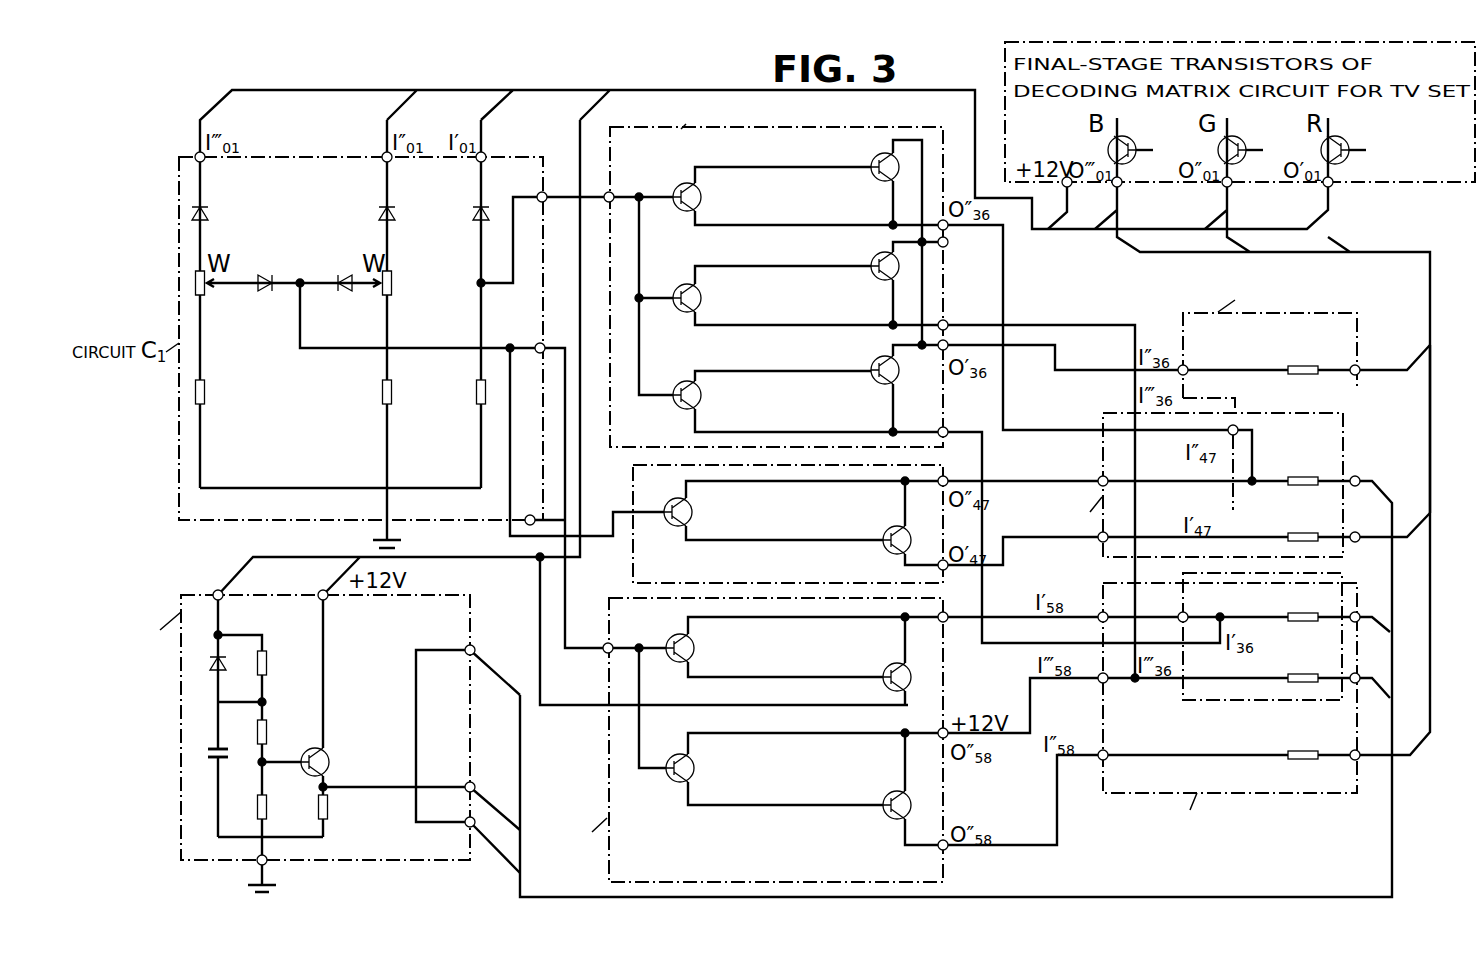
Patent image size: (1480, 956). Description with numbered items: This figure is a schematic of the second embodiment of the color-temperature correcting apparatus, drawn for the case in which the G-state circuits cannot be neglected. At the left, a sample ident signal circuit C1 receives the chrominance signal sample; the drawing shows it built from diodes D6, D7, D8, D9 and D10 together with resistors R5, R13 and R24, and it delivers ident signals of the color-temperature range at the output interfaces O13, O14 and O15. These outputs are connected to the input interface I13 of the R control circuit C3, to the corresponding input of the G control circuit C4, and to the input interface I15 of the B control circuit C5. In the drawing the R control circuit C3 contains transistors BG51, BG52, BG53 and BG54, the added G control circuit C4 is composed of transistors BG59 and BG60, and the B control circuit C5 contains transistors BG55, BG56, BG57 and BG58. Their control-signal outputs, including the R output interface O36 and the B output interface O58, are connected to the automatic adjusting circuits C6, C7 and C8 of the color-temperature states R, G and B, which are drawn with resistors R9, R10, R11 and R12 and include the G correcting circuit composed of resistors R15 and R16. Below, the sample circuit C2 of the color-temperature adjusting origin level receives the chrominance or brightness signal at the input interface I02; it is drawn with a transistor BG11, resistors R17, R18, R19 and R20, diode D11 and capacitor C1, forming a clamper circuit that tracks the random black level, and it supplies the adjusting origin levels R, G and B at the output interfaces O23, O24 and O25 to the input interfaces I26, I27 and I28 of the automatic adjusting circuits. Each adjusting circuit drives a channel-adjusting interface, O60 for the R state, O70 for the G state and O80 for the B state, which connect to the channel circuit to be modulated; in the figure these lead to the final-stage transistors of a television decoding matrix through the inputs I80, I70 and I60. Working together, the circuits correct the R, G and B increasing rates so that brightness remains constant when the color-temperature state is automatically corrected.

The sample circuit of the color-temperature adjusting origin level C2 is at (153, 636).
The control circuit of the color-temperature state R C3 is at (701, 113).
The control circuit of the color-temperature state G C4 is at (705, 563).
The control circuit of the color-temperature state B C5 is at (580, 840).
The automatic adjusting circuit of the color-temperature state R C6 is at (1204, 295).
The automatic adjusting circuit of the color-temperature state G C7 is at (1035, 513).
The automatic adjusting circuit of the color-temperature state B C8 is at (1139, 821).
The input terminal I80 is at (1138, 173).
The input terminal I70 is at (1245, 173).
The input terminal I60 is at (1347, 173).
The output interface of the ident signal R O13 is at (558, 186).
The input interface of the ident signal R I13 is at (620, 186).
The output interface of the ident signal G O14 is at (557, 337).
The output interface of the ident signal B O15 is at (539, 525).
The input interface of the ident signal B I15 is at (592, 638).
The diode D8 is at (217, 215).
The diode D7 is at (404, 215).
The diode D6 is at (466, 215).
The diode D9 is at (264, 301).
The diode D10 is at (344, 301).
The diode D11 is at (238, 669).
The resistor R13 is at (223, 395).
The resistor R24 is at (366, 395).
The resistor R5 is at (466, 395).
The resistor R17 is at (284, 665).
The resistor R18 is at (283, 735).
The resistor R19 is at (283, 811).
The resistor R20 is at (344, 811).
The resistor R9 is at (1304, 388).
The resistor R15 is at (1307, 496).
The resistor R16 is at (1307, 525).
The resistor R11 is at (1306, 634).
The resistor R12 is at (1306, 666).
The resistor R10 is at (1309, 773).
The capacitor C1 is at (231, 757).
The input interface of the chrominance or brightness signal I02 is at (203, 584).
The output interface of the adjusting origin level R O23 is at (444, 640).
The output interface of the adjusting origin level G O24 is at (447, 777).
The output interface of the adjusting origin level B O25 is at (445, 838).
The transistor BG11 is at (344, 753).
The transistor BG51 is at (715, 408).
The transistor BG52 is at (862, 388).
The transistor BG53 is at (715, 302).
The transistor BG54 is at (862, 282).
The transistor BG55 is at (712, 652).
The transistor BG56 is at (867, 666).
The transistor BG57 is at (712, 772).
The transistor BG58 is at (867, 791).
The transistor BG59 is at (711, 359).
The transistor BG60 is at (866, 353).
The output interface of the R control signal O36 is at (960, 379).
The output interface of the B control signal O58 is at (960, 630).
The interface adjusting the channel of the color-temperature R O60 is at (1334, 359).
The interface of the automatic adjusting channel of the color-temperature state G O70 is at (1396, 459).
The interface adjusting the channel of the color-temperature state O80 is at (1334, 743).
The input interface of the adjusting origin level R I26 is at (1332, 605).
The input interface of the adjusting origin level G I27 is at (1334, 470).
The input interface of the adjusting origin level B I28 is at (1339, 698).